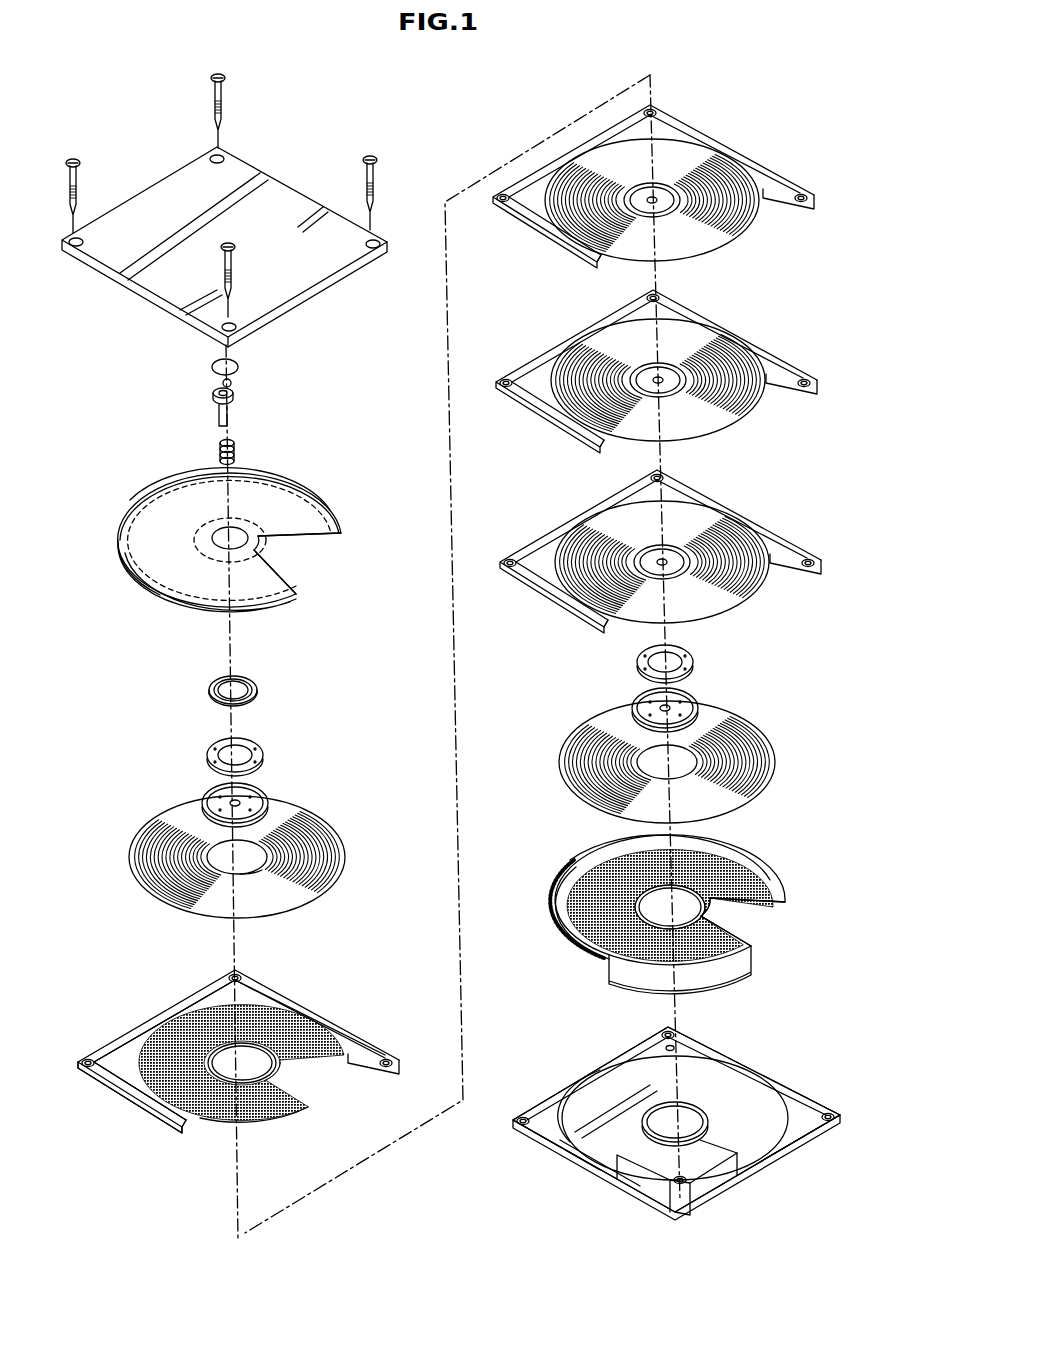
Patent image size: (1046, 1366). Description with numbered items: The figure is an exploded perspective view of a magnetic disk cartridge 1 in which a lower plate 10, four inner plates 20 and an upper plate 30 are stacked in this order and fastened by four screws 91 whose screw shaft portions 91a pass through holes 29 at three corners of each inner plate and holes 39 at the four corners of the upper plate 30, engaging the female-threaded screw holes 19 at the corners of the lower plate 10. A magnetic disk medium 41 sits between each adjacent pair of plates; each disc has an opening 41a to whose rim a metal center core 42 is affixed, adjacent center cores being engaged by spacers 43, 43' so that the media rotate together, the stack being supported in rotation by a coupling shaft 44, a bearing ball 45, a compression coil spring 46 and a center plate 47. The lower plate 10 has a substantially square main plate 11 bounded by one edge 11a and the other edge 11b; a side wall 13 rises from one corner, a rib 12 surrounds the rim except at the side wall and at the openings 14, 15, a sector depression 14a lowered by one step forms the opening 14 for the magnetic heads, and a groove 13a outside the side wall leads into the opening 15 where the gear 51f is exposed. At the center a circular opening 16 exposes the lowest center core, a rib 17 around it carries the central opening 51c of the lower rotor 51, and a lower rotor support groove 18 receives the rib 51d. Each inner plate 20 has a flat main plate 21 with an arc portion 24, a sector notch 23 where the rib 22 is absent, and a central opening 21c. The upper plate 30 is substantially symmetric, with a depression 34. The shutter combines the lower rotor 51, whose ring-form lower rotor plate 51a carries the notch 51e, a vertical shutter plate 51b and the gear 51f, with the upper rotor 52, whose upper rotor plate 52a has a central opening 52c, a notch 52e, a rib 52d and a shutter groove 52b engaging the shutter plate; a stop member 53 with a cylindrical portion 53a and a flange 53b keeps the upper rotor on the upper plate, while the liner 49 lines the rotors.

The magnetic disk cartridge 1 is at (445, 124).
The lower plate 10 is at (703, 1033).
The main plate 11 is at (545, 1108).
The one edge 11a is at (800, 1154).
The other edge 11b is at (580, 1190).
The rib 12 is at (780, 1100).
The side wall 13 is at (705, 1195).
The groove 13a is at (625, 1191).
The opening 14 is at (740, 1170).
The depression 14a is at (770, 1184).
The opening 15 is at (576, 1166).
The circular opening 16 is at (560, 1150).
The rib 17 is at (640, 1095).
The lower rotor support groove 18 is at (666, 1047).
The screw holes 19 is at (664, 1032).
The inner plates 20 is at (279, 980).
The main plate 21 is at (160, 1003).
The central opening 21c is at (238, 1082).
The rib 22 is at (376, 1046).
The notch 23 is at (330, 1090).
The arc portion 24 is at (270, 1122).
The holes 29 is at (232, 976).
The upper plate 30 is at (237, 178).
The depression 34 is at (330, 284).
The holes 39 is at (214, 156).
The magnetic disk medium 41 is at (335, 845).
The opening 41a is at (262, 878).
The center core 42 is at (262, 797).
The spacer 43 is at (689, 661).
The spacer 43' is at (261, 752).
The coupling shaft 44 is at (234, 412).
The bearing ball 45 is at (232, 383).
The compression coil spring 46 is at (236, 452).
The center plate 47 is at (238, 366).
The liner 49 is at (150, 498).
The lower rotor 51 is at (776, 833).
The lower rotor plate 51a is at (762, 880).
The shutter plate 51b is at (716, 956).
The central opening 51c is at (660, 888).
The rib 51d is at (790, 905).
The notch 51e is at (745, 924).
The gear 51f is at (555, 910).
The upper rotor 52 is at (310, 475).
The upper rotor plate 52a is at (312, 492).
The shutter groove 52b is at (200, 620).
The central opening 52c is at (142, 585).
The rib 52d is at (318, 545).
The notch 52e is at (300, 572).
The stop member 53 is at (246, 684).
The cylindrical portion 53a is at (256, 690).
The flange 53b is at (210, 694).
The screws 91 is at (212, 76).
The screw shaft portions 91a is at (214, 108).